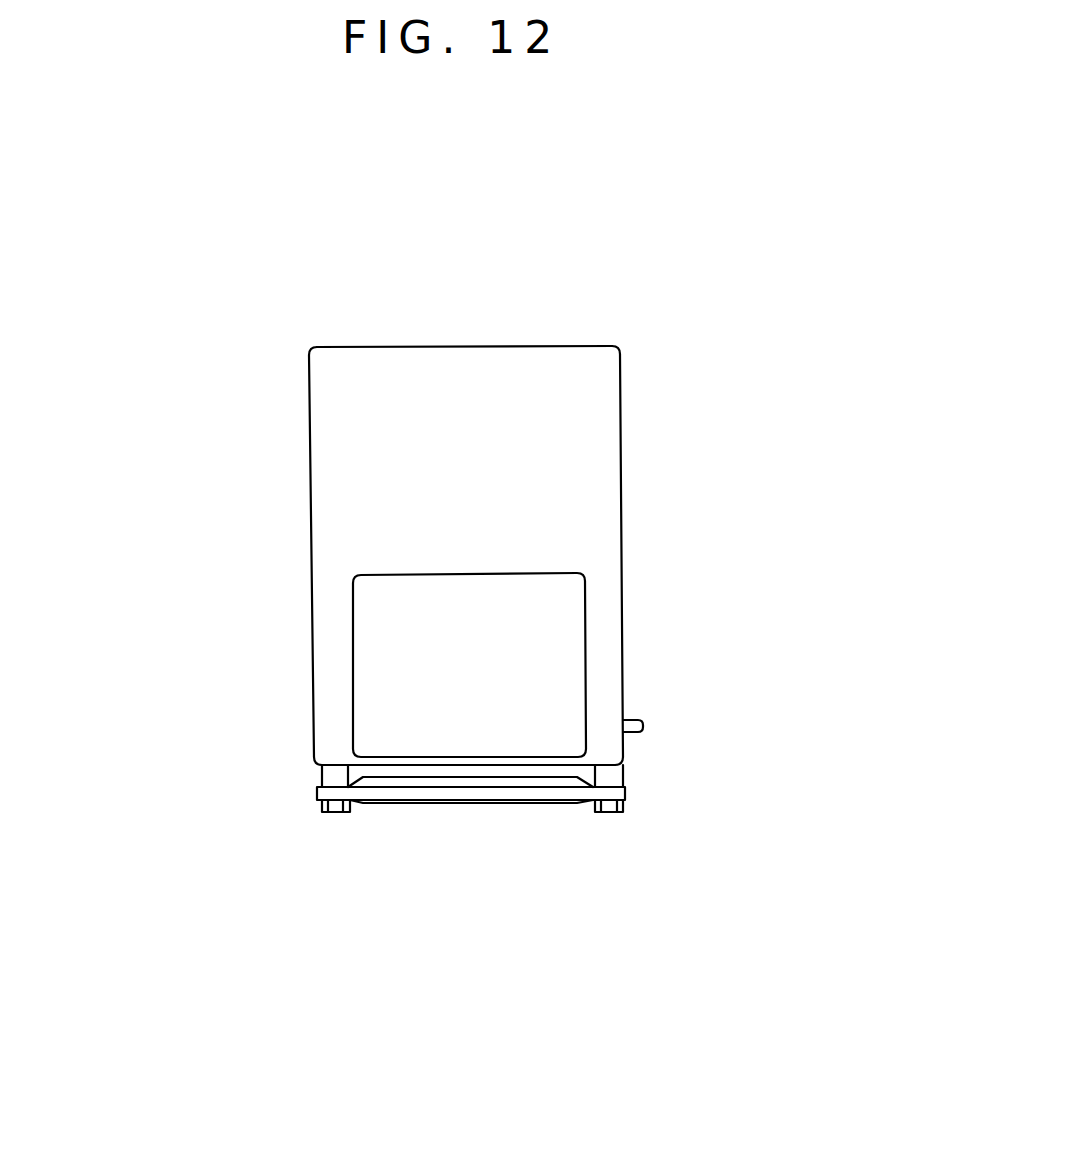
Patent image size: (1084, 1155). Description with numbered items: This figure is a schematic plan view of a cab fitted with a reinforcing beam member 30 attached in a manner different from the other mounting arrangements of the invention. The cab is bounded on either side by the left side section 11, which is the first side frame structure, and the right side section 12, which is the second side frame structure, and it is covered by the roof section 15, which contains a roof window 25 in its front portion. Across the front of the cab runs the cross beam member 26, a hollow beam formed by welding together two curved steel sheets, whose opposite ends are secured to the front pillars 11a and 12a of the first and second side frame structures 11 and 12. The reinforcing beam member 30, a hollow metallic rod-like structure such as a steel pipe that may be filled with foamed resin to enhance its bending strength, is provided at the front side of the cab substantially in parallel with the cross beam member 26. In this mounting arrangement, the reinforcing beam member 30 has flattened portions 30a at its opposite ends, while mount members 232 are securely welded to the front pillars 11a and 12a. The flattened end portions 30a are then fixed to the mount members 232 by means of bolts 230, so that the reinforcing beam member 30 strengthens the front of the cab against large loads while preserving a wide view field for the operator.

The left side section 11 is at (646, 408).
The front pillar 11a is at (610, 757).
The right side section 12 is at (295, 398).
The front pillar 12a is at (330, 760).
The roof section 15 is at (465, 348).
The roof window 25 is at (397, 630).
The cross beam member 26 is at (490, 760).
The reinforcing beam member 30 is at (413, 803).
The flattened portions 30a is at (317, 793).
The bolts 230 is at (332, 813).
The mount members 232 is at (320, 772).